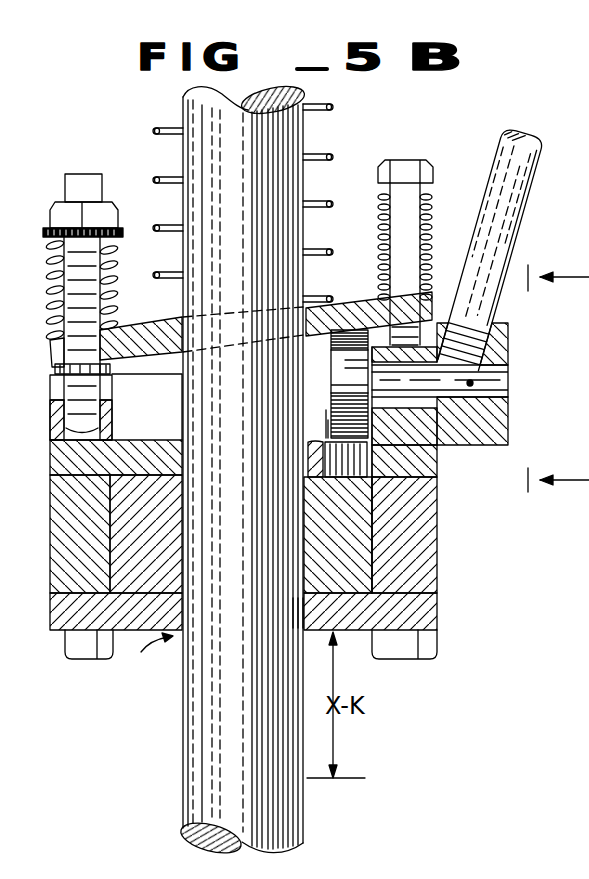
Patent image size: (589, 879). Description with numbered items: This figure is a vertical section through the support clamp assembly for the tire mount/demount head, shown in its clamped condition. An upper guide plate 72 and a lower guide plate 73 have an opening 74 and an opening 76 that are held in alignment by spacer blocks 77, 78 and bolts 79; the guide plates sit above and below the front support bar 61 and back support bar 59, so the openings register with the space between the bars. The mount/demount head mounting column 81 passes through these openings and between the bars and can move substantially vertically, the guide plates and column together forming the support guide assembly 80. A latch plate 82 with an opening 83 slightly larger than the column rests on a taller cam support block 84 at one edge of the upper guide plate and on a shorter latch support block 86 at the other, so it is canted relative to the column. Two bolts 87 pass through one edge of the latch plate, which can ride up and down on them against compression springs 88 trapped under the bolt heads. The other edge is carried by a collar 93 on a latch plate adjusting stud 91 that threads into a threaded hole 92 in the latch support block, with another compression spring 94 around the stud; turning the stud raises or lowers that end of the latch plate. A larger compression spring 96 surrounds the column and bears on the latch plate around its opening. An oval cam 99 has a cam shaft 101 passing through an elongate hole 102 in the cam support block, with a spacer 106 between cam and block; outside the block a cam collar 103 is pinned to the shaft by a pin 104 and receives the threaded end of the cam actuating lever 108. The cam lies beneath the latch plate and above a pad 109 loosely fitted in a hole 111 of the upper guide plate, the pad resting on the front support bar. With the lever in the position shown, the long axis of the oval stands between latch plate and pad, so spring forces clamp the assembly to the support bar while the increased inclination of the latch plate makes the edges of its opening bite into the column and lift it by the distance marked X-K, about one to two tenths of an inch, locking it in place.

The back support bar 59 is at (175, 540).
The front support bar 61 is at (306, 505).
The upper guide plate 72 is at (432, 470).
The lower guide plate 73 is at (52, 612).
The opening 74 is at (182, 460).
The opening 76 is at (303, 612).
The spacer block 77 is at (52, 583).
The spacer block 78 is at (430, 552).
The bolts 79 is at (53, 650).
The support guide assembly 80 is at (148, 658).
The mount/demount head mounting column 81 is at (182, 701).
The latch plate 82 is at (128, 332).
The opening 83 is at (305, 318).
The cam support block 84 is at (437, 447).
The latch support block 86 is at (50, 418).
The bolts 87 is at (400, 170).
The compression springs 88 is at (427, 193).
The latch plate adjusting stud 91 is at (83, 174).
The threaded hole 92 is at (100, 417).
The collar 93 is at (110, 367).
The compression spring 94 is at (113, 270).
The compression spring 96 is at (335, 106).
The cam 99 is at (342, 379).
The cam shaft 101 is at (508, 394).
The elongate hole 102 is at (336, 399).
The cam collar 103 is at (508, 337).
The pin 104 is at (472, 384).
The spacer 106 is at (331, 353).
The cam actuating lever 108 is at (540, 195).
The pad 109 is at (316, 481).
The hole 111 is at (326, 426).